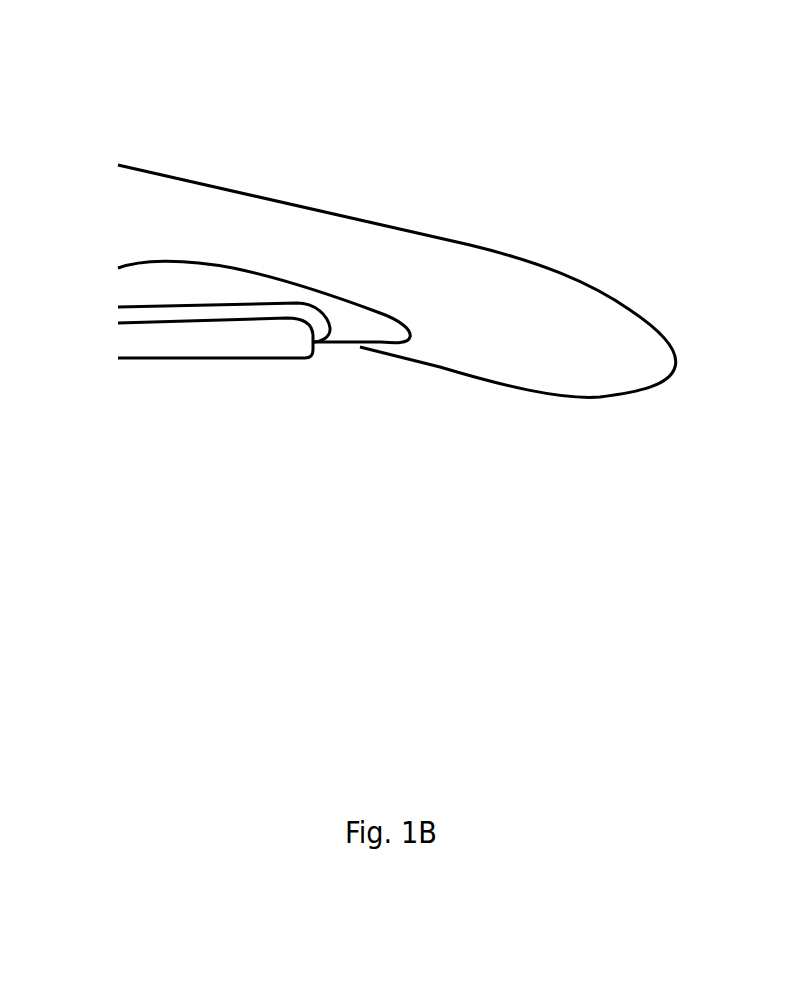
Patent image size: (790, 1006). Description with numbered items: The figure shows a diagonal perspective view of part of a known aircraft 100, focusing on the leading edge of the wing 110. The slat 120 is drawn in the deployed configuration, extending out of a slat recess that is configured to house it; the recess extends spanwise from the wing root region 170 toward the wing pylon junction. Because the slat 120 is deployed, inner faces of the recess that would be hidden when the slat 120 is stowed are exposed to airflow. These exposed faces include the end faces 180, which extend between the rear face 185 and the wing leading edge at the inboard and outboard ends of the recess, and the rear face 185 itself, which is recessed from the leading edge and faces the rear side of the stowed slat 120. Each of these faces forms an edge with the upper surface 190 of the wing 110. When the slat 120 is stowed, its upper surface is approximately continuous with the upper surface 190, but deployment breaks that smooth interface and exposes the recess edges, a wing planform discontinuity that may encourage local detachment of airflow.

The aircraft 100 is at (368, 123).
The wing 110 is at (209, 238).
The slat 120 is at (223, 337).
The wing root region 170 is at (332, 308).
The end faces 180 is at (307, 320).
The rear face 185 is at (162, 313).
The upper surface 190 is at (195, 287).